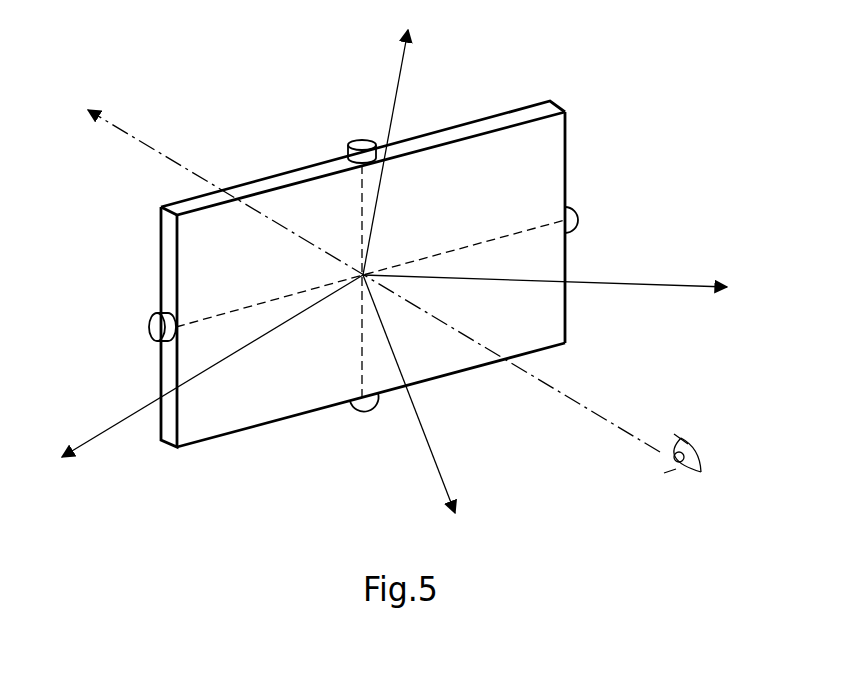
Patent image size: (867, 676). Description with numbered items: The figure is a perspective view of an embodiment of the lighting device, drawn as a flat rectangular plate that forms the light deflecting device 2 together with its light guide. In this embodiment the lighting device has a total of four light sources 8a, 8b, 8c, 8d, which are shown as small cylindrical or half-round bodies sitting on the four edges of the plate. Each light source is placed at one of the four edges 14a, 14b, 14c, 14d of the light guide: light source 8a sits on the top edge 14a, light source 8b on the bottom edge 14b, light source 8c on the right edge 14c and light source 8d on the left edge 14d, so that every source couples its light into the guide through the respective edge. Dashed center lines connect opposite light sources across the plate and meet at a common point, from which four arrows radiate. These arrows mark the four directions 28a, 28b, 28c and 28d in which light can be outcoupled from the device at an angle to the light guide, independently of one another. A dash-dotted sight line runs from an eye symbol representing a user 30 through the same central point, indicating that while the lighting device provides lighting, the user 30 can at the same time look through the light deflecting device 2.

The light deflecting device 2 is at (362, 282).
The light source 8a is at (360, 141).
The light source 8b is at (370, 410).
The light source 8c is at (579, 222).
The light source 8d is at (149, 323).
The edge of the light guide 14a is at (292, 175).
The edge of the light guide 14b is at (277, 421).
The edge of the light guide 14c is at (568, 168).
The edge of the light guide 14d is at (164, 268).
The outcoupling direction 28a is at (430, 442).
The outcoupling direction 28b is at (405, 67).
The outcoupling direction 28c is at (100, 437).
The outcoupling direction 28d is at (653, 288).
The user 30 is at (690, 440).